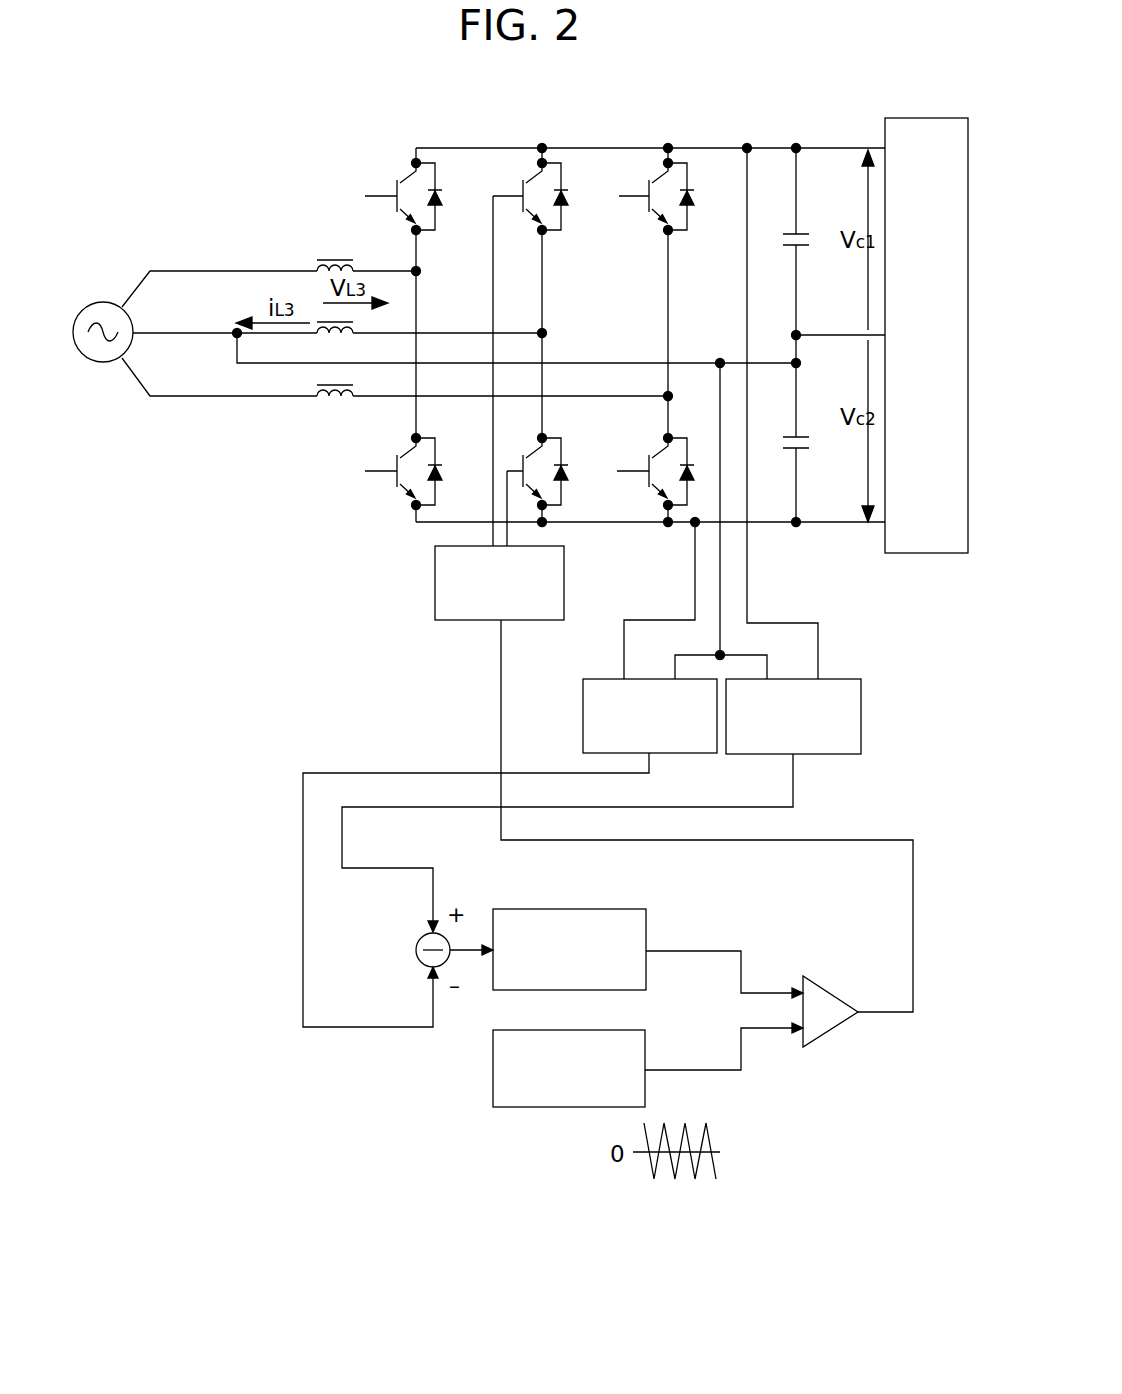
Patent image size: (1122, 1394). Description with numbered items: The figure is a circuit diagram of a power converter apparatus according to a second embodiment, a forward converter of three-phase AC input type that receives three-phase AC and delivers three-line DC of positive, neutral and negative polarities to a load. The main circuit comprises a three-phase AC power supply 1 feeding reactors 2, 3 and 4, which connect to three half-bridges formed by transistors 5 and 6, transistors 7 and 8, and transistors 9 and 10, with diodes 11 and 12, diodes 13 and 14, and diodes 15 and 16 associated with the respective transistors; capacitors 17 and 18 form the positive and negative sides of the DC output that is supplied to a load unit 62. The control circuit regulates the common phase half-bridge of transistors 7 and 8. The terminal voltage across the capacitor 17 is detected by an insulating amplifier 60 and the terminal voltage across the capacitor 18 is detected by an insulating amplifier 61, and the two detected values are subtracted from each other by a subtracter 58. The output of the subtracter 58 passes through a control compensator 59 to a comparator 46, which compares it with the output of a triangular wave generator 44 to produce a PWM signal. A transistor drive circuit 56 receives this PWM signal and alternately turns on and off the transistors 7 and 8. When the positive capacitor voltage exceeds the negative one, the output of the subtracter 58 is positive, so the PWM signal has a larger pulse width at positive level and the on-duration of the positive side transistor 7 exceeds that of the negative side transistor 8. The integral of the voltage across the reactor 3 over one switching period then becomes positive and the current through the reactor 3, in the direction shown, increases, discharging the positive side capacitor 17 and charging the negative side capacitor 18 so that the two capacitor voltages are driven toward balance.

The three-phase AC power supply 1 is at (100, 370).
The reactor 2 is at (346, 244).
The reactor 3 is at (340, 336).
The reactor 4 is at (328, 404).
The transistor 5 is at (408, 180).
The transistor 6 is at (406, 456).
The transistor 7 is at (534, 180).
The transistor 8 is at (532, 456).
The transistor 9 is at (660, 180).
The transistor 10 is at (660, 458).
The diode 11 is at (440, 222).
The diode 12 is at (440, 484).
The diode 13 is at (566, 222).
The diode 14 is at (566, 484).
The diode 15 is at (692, 222).
The diode 16 is at (688, 470).
The capacitor 17 is at (806, 243).
The capacitor 18 is at (806, 445).
The load unit 62 is at (885, 124).
The transistor drive circuit 56 is at (468, 622).
The insulating amplifier 61 is at (582, 712).
The insulating amplifier 60 is at (863, 714).
The subtracter 58 is at (413, 955).
The control compensator 59 is at (600, 908).
The triangular wave generator 44 is at (630, 1030).
The comparator 46 is at (835, 988).